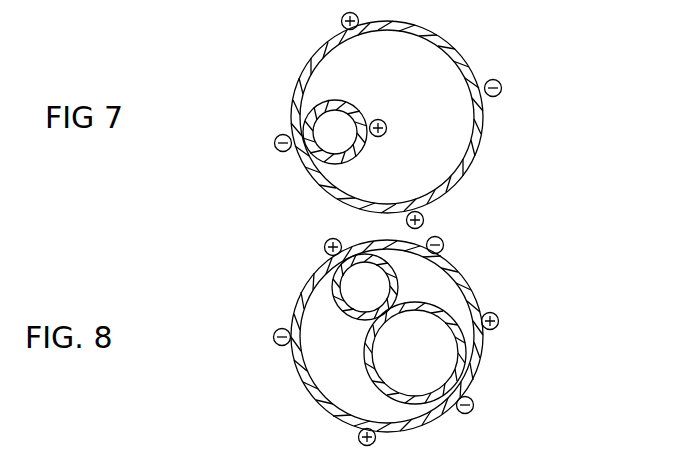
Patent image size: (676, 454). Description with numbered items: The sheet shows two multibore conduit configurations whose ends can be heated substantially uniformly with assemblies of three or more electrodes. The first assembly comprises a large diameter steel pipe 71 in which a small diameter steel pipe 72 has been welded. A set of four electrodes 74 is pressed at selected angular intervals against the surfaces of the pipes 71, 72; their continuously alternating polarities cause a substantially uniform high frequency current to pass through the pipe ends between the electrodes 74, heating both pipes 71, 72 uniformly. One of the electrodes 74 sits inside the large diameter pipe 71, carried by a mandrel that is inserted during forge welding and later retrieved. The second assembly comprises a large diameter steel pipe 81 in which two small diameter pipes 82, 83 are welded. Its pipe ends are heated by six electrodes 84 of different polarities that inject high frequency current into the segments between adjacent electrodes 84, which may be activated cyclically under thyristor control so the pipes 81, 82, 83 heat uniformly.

In FIG. 7, the large diameter steel pipe 71 is at (445, 45).
In FIG. 7, the small diameter steel pipe 72 is at (335, 101).
In FIG. 7, the electrodes 74 is at (341, 24).
In FIG. 8, the large diameter steel pipe 81 is at (462, 275).
In FIG. 8, the small diameter pipe 82 is at (341, 309).
In FIG. 8, the small diameter pipe 83 is at (369, 378).
In FIG. 7, the electrodes 84 is at (266, 9).
In FIG. 8, the electrodes 84 is at (324, 247).